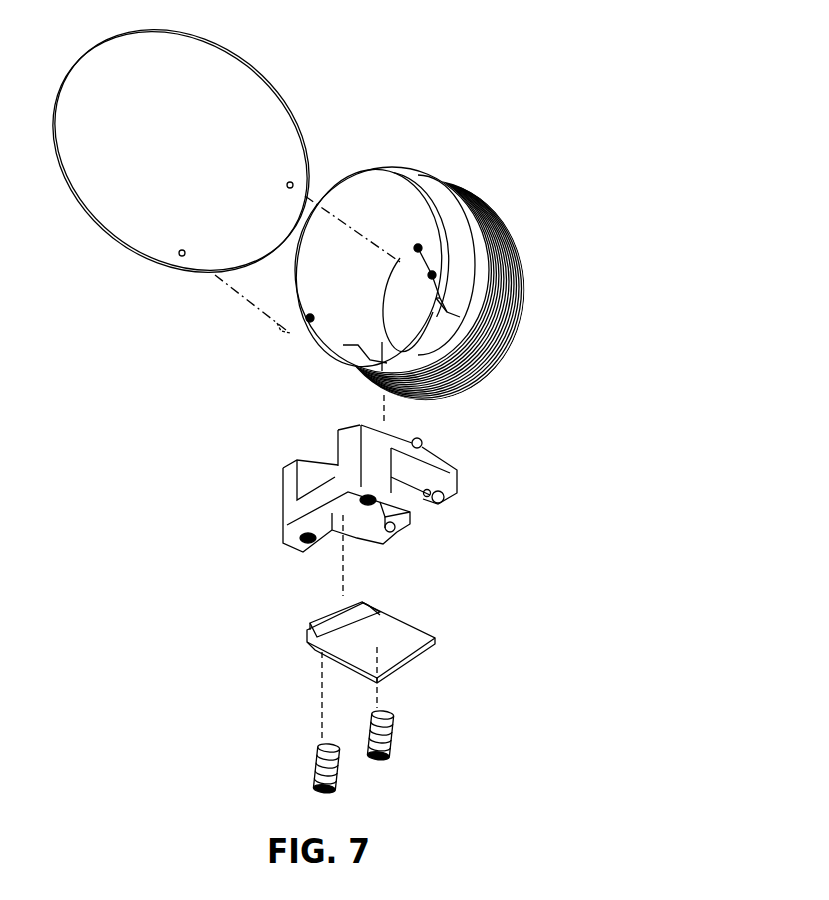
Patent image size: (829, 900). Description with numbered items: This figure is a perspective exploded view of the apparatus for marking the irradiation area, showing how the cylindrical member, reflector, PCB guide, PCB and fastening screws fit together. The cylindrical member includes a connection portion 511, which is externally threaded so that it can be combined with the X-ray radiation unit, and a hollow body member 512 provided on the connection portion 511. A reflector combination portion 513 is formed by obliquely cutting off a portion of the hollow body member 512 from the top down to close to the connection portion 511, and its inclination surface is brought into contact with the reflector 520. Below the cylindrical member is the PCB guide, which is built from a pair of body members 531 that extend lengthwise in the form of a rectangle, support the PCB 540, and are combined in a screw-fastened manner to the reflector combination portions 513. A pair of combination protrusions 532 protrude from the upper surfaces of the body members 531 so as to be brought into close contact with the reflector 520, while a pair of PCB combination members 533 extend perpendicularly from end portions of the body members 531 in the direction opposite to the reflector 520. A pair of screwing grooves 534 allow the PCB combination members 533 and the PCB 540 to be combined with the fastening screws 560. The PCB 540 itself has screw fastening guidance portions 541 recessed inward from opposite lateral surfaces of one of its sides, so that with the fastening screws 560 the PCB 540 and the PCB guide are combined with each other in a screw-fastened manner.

The connection portion 511 is at (515, 226).
The hollow body member 512 is at (328, 272).
The reflector combination portion 513 is at (328, 343).
The reflector 520 is at (181, 161).
The body members 531 is at (417, 535).
The combination protrusions 532 is at (438, 453).
The PCB combination members 533 is at (345, 462).
The screwing grooves 534 is at (306, 539).
The PCB 540 is at (412, 643).
The screw fastening guidance portions 541 is at (367, 620).
The fastening screw 560 is at (310, 752).